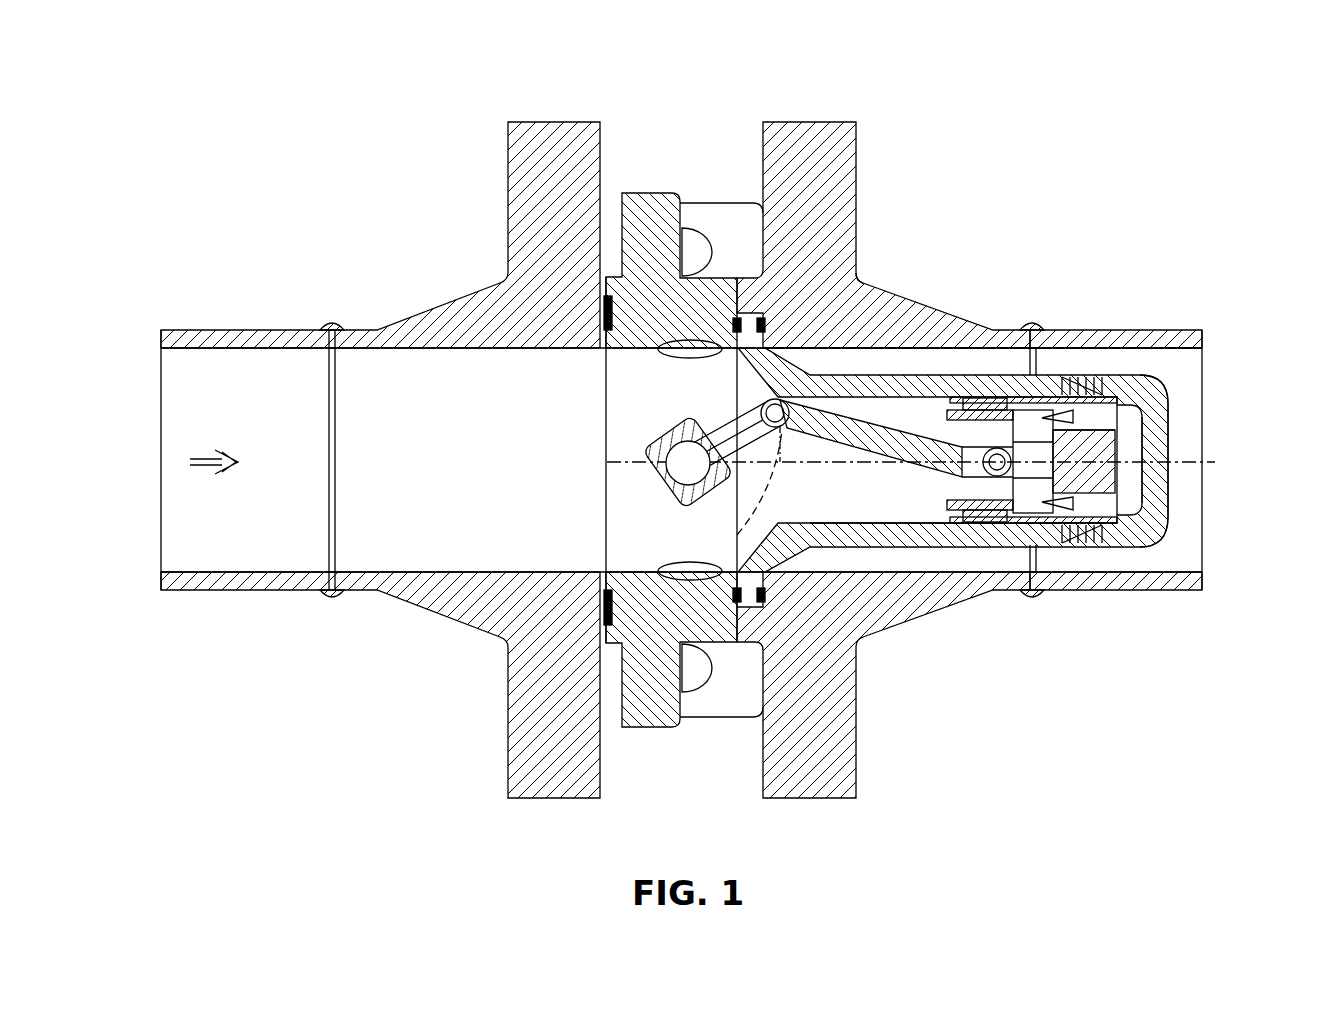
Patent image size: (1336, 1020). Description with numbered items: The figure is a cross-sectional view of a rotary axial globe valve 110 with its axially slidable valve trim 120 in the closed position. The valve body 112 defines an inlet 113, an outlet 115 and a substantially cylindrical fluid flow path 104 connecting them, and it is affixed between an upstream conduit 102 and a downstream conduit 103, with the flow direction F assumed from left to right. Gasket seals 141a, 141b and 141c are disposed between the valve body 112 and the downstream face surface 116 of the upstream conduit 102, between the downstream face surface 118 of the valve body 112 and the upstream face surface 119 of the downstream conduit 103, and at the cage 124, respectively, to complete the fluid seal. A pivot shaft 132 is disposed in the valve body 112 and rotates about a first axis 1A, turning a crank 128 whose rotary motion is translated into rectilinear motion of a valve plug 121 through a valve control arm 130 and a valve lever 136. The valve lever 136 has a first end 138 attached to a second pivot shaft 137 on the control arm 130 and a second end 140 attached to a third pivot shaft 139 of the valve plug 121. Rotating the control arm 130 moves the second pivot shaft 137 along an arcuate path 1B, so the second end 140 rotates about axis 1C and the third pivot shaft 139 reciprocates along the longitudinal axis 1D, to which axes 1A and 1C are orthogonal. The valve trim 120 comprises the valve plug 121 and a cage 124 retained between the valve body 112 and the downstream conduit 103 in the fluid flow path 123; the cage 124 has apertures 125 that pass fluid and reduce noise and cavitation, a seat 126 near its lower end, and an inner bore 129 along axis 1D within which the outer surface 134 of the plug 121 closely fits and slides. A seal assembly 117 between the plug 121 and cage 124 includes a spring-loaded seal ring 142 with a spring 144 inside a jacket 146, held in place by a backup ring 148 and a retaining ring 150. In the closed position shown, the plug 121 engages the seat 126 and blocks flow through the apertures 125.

The valve 110 is at (392, 86).
The upstream conduit 102 is at (237, 592).
The downstream conduit 103 is at (1183, 592).
The fluid flow path 104 is at (662, 559).
The valve body 112 is at (633, 729).
The inlet 113 is at (654, 422).
The outlet 115 is at (847, 569).
The downstream face surface of the upstream conduit 116 is at (606, 565).
The seal assembly 117 is at (948, 547).
The downstream face surface of the valve body 118 is at (740, 606).
The upstream face surface of the downstream conduit 119 is at (757, 624).
The axially slidable valve trim 120 is at (876, 360).
The valve plug 121 is at (1108, 547).
The fluid flow path 123 is at (1197, 374).
The cage 124 is at (878, 548).
The apertures 125 is at (1100, 395).
The seat 126 is at (1112, 547).
The crank 128 is at (712, 430).
The inner bore 129 is at (950, 524).
The valve control arm 130 is at (733, 482).
The pivot shaft 132 is at (672, 472).
The outer surface 134 is at (1000, 525).
The valve lever 136 is at (833, 445).
The second pivot shaft 137 is at (762, 400).
The first end 138 is at (778, 400).
The third pivot shaft 139 is at (901, 410).
The second end 140 is at (1010, 490).
The gasket seal 141a is at (728, 278).
The gasket seal 141b is at (764, 318).
The gasket seal 141c is at (607, 318).
The spring-loaded seal ring 142 is at (1052, 430).
The spring 144 is at (1003, 403).
The jacket 146 is at (1070, 403).
The backup ring 148 is at (977, 403).
The retaining ring 150 is at (963, 408).
The first axis 1A is at (688, 465).
The arcuate path 1B is at (779, 470).
The axis 1C is at (983, 466).
The longitudinal axis 1D is at (1203, 465).
The flow direction F is at (223, 463).